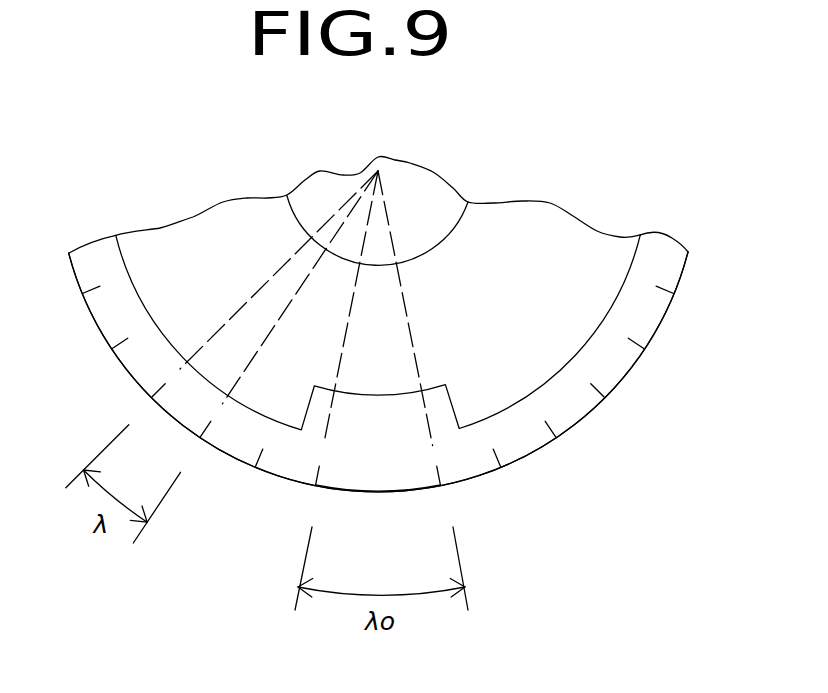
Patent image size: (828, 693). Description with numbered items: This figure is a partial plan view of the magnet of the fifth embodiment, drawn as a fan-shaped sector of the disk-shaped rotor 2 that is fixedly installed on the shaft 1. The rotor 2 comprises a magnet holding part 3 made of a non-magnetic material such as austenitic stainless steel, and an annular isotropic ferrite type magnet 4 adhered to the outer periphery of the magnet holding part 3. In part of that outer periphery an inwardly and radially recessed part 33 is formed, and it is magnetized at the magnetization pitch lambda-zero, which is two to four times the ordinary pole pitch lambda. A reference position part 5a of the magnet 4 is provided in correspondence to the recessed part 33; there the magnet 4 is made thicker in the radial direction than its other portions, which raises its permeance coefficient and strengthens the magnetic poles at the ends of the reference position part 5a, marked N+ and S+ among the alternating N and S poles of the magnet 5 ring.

The shaft 1 is at (433, 172).
The rotor 2 is at (235, 213).
The magnet holding part 3 is at (550, 203).
The magnet 4 is at (667, 242).
The multipolar magnet 5 is at (663, 322).
The reference position part 5a is at (380, 493).
The recessed part 33 is at (455, 405).